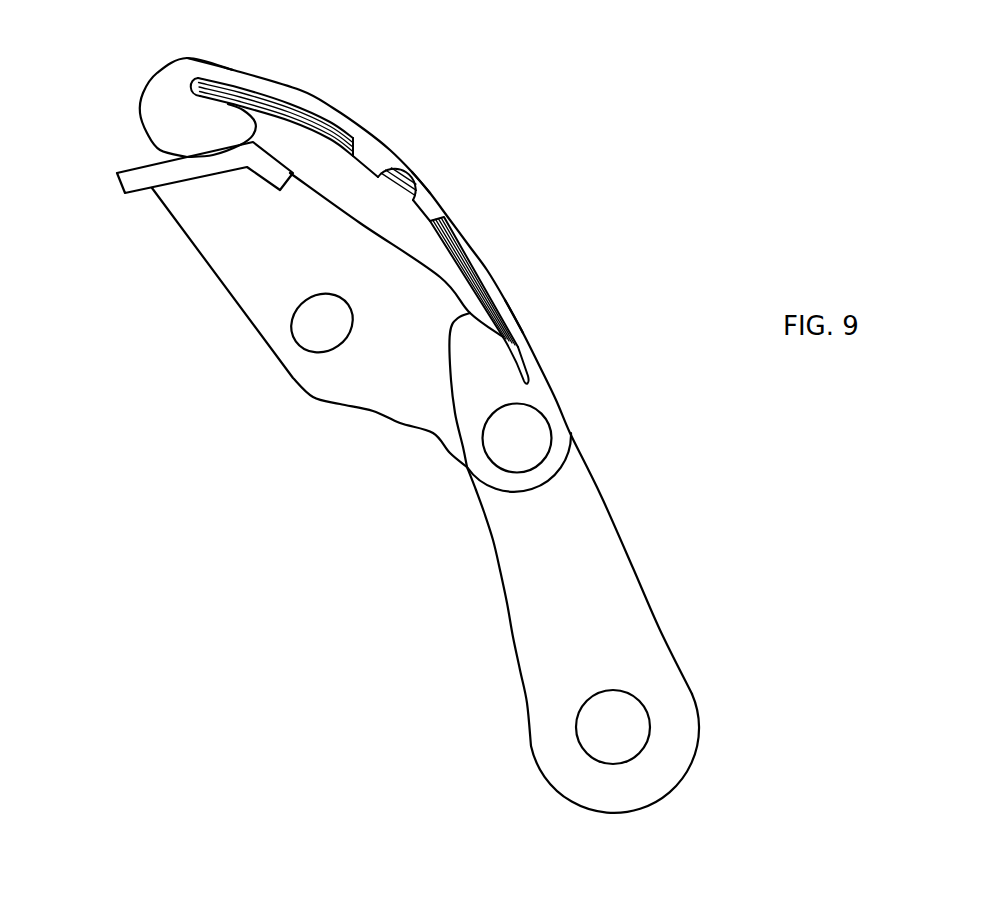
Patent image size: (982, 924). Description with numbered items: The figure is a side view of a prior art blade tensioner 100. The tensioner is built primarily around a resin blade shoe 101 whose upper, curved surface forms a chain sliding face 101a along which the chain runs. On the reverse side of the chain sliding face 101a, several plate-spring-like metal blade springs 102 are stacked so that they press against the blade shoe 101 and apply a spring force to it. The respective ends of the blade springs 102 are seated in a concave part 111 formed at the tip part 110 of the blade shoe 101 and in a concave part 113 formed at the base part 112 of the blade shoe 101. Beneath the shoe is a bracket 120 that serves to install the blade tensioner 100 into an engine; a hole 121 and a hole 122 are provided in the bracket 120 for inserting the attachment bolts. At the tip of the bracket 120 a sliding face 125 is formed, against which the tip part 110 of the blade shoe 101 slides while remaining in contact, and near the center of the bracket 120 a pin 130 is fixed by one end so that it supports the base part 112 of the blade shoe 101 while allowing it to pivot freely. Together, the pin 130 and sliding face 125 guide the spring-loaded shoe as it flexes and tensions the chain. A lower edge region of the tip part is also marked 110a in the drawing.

The blade tensioner 100 is at (560, 205).
The blade shoe 101 is at (386, 141).
The chain sliding face 101a is at (450, 207).
The blade springs 102 is at (463, 275).
The tip part 110 is at (146, 99).
The head lower edge 110a is at (235, 148).
The concave part 111 is at (233, 103).
The base part 112 is at (458, 347).
The concave part 113 is at (527, 380).
The bracket 120 is at (640, 567).
The hole 121 is at (633, 756).
The hole 122 is at (306, 350).
The sliding face 125 is at (133, 175).
The pin 130 is at (533, 435).